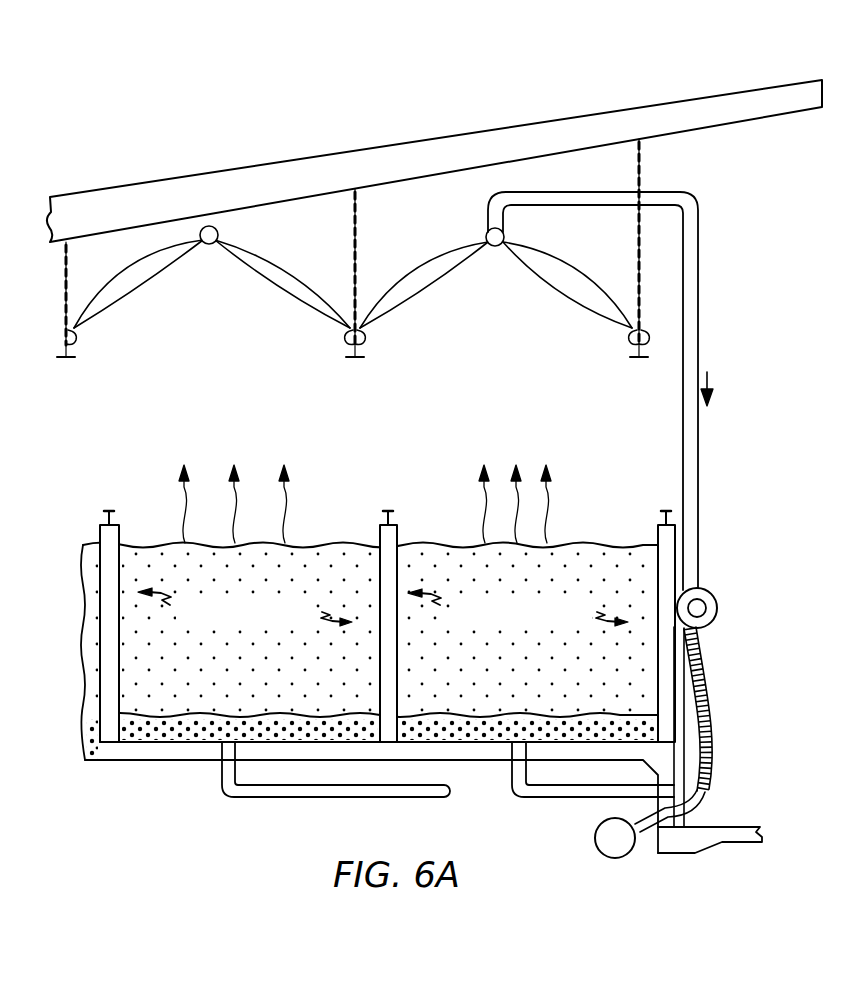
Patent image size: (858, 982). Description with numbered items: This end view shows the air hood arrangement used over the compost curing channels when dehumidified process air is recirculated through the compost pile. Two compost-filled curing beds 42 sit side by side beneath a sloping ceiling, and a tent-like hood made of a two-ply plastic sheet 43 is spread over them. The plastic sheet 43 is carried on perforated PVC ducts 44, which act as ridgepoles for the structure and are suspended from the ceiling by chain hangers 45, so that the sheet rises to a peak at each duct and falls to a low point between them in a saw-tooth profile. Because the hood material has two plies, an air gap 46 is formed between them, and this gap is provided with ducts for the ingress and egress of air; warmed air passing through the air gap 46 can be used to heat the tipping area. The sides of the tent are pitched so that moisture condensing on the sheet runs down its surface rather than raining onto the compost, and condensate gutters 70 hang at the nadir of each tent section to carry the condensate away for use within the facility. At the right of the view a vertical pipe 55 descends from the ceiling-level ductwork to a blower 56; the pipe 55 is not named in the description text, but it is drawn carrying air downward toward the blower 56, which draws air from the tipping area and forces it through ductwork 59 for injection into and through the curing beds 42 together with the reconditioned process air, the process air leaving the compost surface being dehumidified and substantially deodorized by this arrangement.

The curing beds 42 is at (413, 555).
The plastic sheet 43 is at (288, 293).
The perforated PVC ducts 44 is at (209, 246).
The chain hangers 45 is at (358, 233).
The air gap 46 is at (440, 272).
The air supply pipe 55 is at (699, 290).
The blower 56 is at (718, 606).
The ductwork 59 is at (608, 858).
The condensate gutters 70 is at (364, 338).